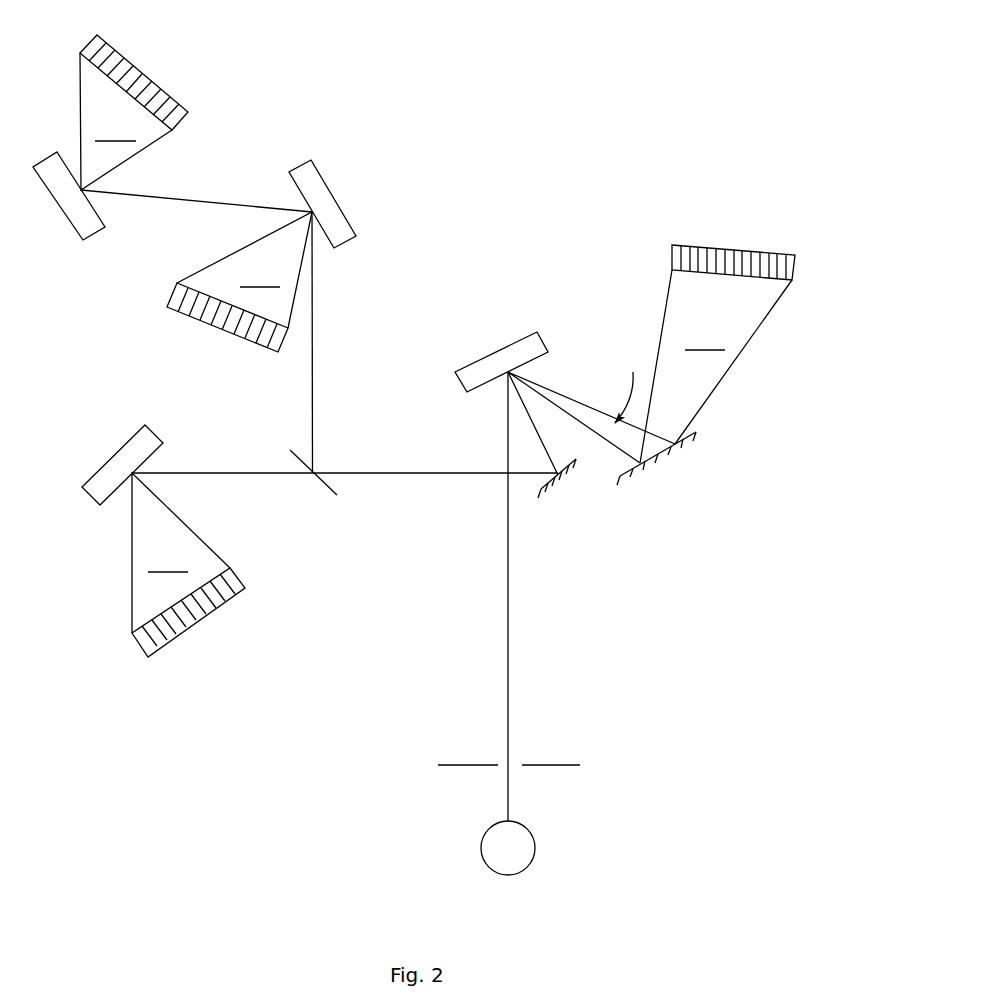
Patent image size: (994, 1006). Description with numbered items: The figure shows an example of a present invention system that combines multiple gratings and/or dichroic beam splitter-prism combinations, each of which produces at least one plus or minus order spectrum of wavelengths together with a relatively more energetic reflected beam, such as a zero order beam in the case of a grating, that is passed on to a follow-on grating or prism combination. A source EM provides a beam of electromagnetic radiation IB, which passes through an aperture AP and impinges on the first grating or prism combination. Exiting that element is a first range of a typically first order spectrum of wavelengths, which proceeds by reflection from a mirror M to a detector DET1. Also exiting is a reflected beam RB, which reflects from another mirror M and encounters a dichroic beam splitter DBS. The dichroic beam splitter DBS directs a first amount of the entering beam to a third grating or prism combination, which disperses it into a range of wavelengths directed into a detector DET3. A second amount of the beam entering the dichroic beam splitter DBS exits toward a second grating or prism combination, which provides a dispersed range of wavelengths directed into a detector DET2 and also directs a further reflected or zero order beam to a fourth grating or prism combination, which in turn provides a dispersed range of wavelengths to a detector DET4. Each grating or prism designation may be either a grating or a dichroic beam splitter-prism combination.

The detector DET1 is at (718, 243).
The detector DET2 is at (180, 318).
The detector DET3 is at (207, 627).
The detector DET4 is at (153, 70).
The dichroic beam splitter DBS is at (345, 490).
The mirror M is at (562, 487).
The beam of electromagnetic radiation IB is at (525, 638).
The aperture AP is at (565, 747).
The source EM is at (494, 858).
The reflected beam RB is at (591, 403).